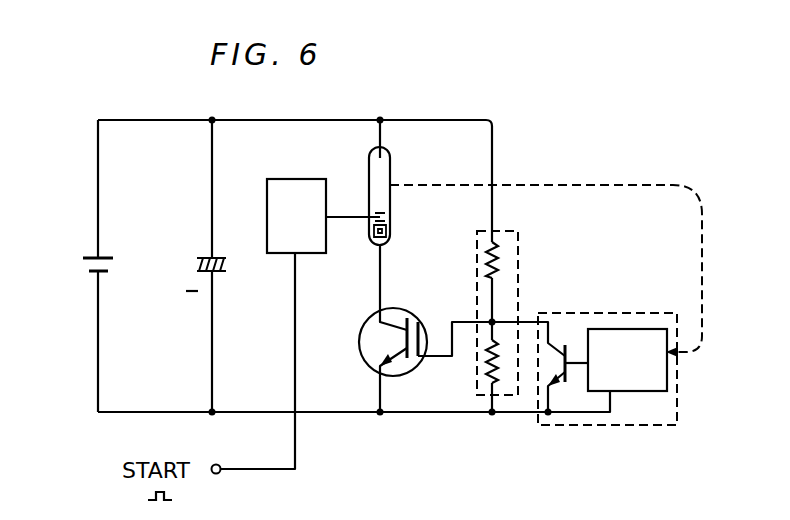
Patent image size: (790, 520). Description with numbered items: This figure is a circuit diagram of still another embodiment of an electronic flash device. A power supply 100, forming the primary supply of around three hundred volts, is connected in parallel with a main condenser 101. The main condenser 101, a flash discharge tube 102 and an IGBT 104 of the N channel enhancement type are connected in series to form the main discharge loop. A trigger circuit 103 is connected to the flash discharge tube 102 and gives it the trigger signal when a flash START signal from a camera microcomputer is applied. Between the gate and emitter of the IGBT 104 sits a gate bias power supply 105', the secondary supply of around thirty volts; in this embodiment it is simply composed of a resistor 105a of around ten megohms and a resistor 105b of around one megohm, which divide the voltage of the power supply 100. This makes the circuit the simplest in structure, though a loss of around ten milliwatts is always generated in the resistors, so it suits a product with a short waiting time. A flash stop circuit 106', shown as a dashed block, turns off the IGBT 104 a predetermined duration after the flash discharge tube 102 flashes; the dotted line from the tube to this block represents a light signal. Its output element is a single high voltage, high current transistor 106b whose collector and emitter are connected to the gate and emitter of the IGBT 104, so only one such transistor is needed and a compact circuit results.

The power supply 100 is at (80, 269).
The main condenser 101 is at (193, 265).
The flash discharge tube 102 is at (392, 160).
The trigger circuit 103 is at (297, 178).
The IGBT 104 is at (385, 308).
The gate bias power supply 105' is at (532, 304).
The resistor 105a is at (497, 274).
The resistor 105b is at (503, 373).
The flash stop circuit 106' is at (546, 305).
The transistor 106b is at (557, 388).